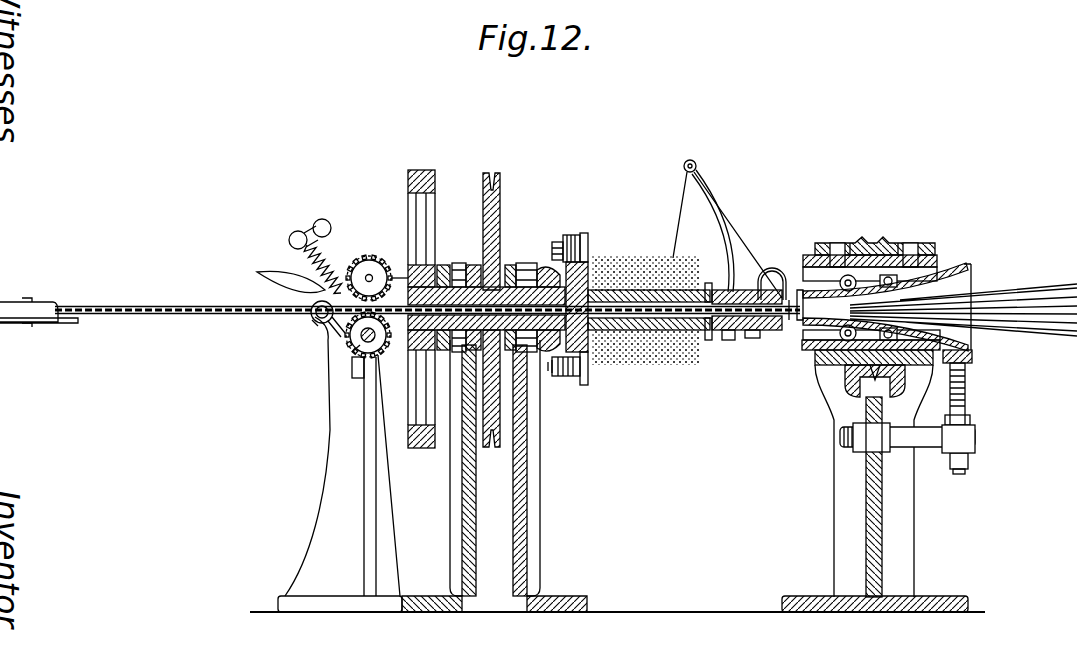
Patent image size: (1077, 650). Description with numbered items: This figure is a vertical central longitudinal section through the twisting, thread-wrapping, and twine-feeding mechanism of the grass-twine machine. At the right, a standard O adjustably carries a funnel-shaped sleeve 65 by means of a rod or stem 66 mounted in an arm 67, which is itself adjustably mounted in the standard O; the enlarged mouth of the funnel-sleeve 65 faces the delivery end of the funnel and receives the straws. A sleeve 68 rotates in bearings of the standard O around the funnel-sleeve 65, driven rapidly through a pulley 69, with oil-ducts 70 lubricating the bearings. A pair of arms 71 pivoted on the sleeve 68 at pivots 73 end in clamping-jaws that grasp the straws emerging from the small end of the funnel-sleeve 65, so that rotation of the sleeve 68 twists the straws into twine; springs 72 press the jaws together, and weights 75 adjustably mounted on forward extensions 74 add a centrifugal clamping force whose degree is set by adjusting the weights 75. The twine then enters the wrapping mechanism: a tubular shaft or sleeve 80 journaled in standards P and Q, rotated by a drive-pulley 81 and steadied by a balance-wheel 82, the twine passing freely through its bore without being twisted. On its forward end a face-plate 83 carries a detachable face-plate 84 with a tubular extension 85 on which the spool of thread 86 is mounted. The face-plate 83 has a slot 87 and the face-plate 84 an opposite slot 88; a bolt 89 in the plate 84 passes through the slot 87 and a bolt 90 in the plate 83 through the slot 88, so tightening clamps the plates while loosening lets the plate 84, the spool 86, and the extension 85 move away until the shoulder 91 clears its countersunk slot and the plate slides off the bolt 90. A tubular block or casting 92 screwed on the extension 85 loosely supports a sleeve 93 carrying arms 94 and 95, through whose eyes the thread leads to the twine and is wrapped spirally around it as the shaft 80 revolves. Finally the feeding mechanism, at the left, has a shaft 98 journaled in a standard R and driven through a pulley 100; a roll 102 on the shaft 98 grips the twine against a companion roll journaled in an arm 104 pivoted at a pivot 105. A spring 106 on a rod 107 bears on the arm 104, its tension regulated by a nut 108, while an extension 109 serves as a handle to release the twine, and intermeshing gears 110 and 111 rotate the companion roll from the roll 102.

The funnel-shaped sleeve 65 is at (962, 262).
The rod or stem 66 is at (962, 396).
The arm 67 is at (907, 450).
The sleeve 68 is at (949, 262).
The pulley 69 is at (872, 245).
The oil-ducts 70 is at (836, 242).
The arms 71 is at (790, 300).
The springs 72 is at (797, 330).
The pivots 73 is at (852, 247).
The forward extensions 74 is at (900, 247).
The weights 75 is at (898, 283).
The tubular shaft or sleeve 80 is at (410, 322).
The drive-pulley 81 is at (500, 228).
The balance-wheel 82 is at (413, 183).
The face-plate 83 is at (570, 234).
The face-plate 84 is at (588, 268).
The tubular extension 85 is at (626, 284).
The spool of thread 86 is at (690, 350).
The slot 87 is at (566, 377).
The slot 88 is at (584, 232).
The bolt 89 is at (588, 372).
The bolt 90 is at (556, 241).
The shoulder 91 is at (549, 362).
The tubular block or casting 92 is at (726, 340).
The sleeve 93 is at (752, 338).
The arm 94 is at (724, 212).
The arm 95 is at (772, 270).
The shaft 98 is at (364, 342).
The pulley 100 is at (380, 259).
The roll 102 is at (358, 347).
The arm 104 is at (316, 300).
The pivot 105 is at (326, 323).
The spring 106 is at (331, 263).
The rod 107 is at (304, 231).
The nut 108 is at (327, 223).
The extension 109 is at (262, 274).
The gear 110 is at (345, 334).
The gear 111 is at (389, 274).
The standard O is at (913, 513).
The standard P is at (465, 490).
The standard Q is at (520, 497).
The standard R is at (335, 462).